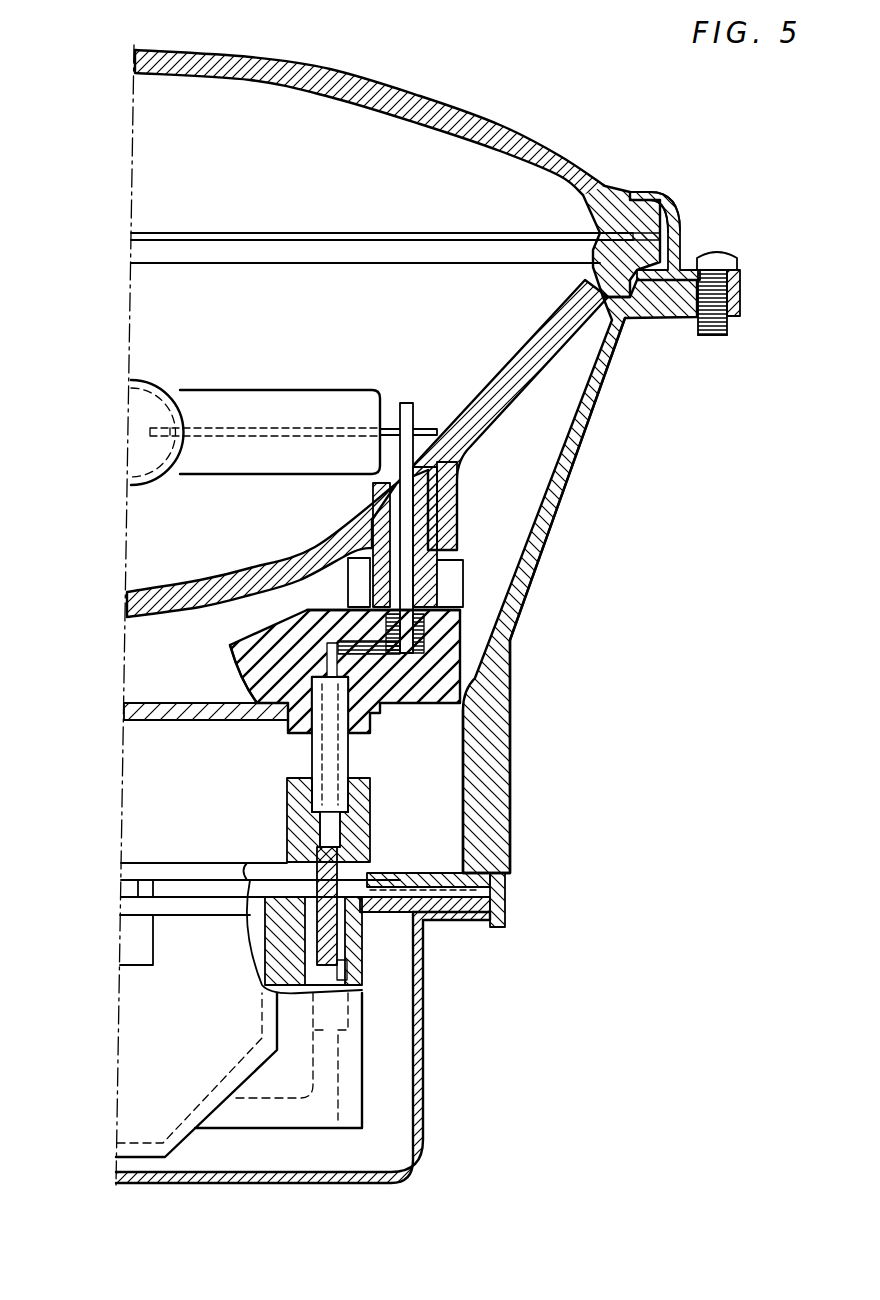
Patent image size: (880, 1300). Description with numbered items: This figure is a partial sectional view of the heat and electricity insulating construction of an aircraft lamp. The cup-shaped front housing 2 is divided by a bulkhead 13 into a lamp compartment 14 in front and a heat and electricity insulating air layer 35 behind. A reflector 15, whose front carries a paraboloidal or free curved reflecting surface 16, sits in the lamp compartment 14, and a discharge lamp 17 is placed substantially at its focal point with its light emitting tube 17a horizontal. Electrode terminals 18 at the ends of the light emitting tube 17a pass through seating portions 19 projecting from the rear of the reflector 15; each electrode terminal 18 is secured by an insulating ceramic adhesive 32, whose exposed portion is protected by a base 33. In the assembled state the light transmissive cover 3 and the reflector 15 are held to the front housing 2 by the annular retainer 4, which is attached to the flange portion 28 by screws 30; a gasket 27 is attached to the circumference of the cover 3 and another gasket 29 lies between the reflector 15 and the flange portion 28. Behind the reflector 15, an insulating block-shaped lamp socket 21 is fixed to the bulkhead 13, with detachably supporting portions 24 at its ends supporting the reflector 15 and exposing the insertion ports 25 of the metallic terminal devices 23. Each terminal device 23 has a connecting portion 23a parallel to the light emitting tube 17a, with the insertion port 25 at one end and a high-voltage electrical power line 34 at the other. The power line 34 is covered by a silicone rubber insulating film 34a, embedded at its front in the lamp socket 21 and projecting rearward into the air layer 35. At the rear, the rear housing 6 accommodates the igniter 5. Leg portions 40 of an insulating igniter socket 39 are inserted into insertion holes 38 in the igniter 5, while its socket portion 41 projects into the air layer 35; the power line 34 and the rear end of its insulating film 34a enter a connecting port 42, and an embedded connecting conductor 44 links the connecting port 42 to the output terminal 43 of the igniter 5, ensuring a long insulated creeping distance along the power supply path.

The front housing 2 is at (510, 747).
The light transmissive cover 3 is at (370, 80).
The retainer 4 is at (645, 190).
The igniter 5 is at (171, 1112).
The rear housing 6 is at (420, 1067).
The bulkhead 13 is at (153, 722).
The lamp compartment 14 is at (528, 433).
The reflector 15 is at (552, 373).
The reflecting surface 16 is at (548, 330).
The discharge lamp 17 is at (160, 388).
The light emitting tube 17a is at (266, 390).
The electrode terminal 18 is at (430, 545).
The seating portion 19 is at (440, 500).
The lamp socket 21 is at (126, 683).
The metallic terminal device 23 is at (430, 660).
The connecting portion 23a is at (380, 660).
The detachably supporting portion 24 is at (470, 600).
The insertion port 25 is at (348, 597).
The gasket 27 is at (680, 227).
The flange portion 28 is at (735, 305).
The gasket 29 is at (740, 285).
The screw 30 is at (712, 338).
The insulating ceramic adhesive 32 is at (373, 522).
The base 33 is at (440, 568).
The high-voltage electrical power line 34 is at (257, 693).
The insulating film 34a is at (312, 749).
The heat and electricity insulating air layer 35 is at (167, 825).
The insertion hole 38 is at (318, 963).
The igniter socket 39 is at (127, 871).
The leg portion 40 is at (265, 958).
The socket portion 41 is at (362, 828).
The connecting port 42 is at (340, 775).
The output terminal 43 is at (365, 973).
The connecting conductor 44 is at (365, 941).